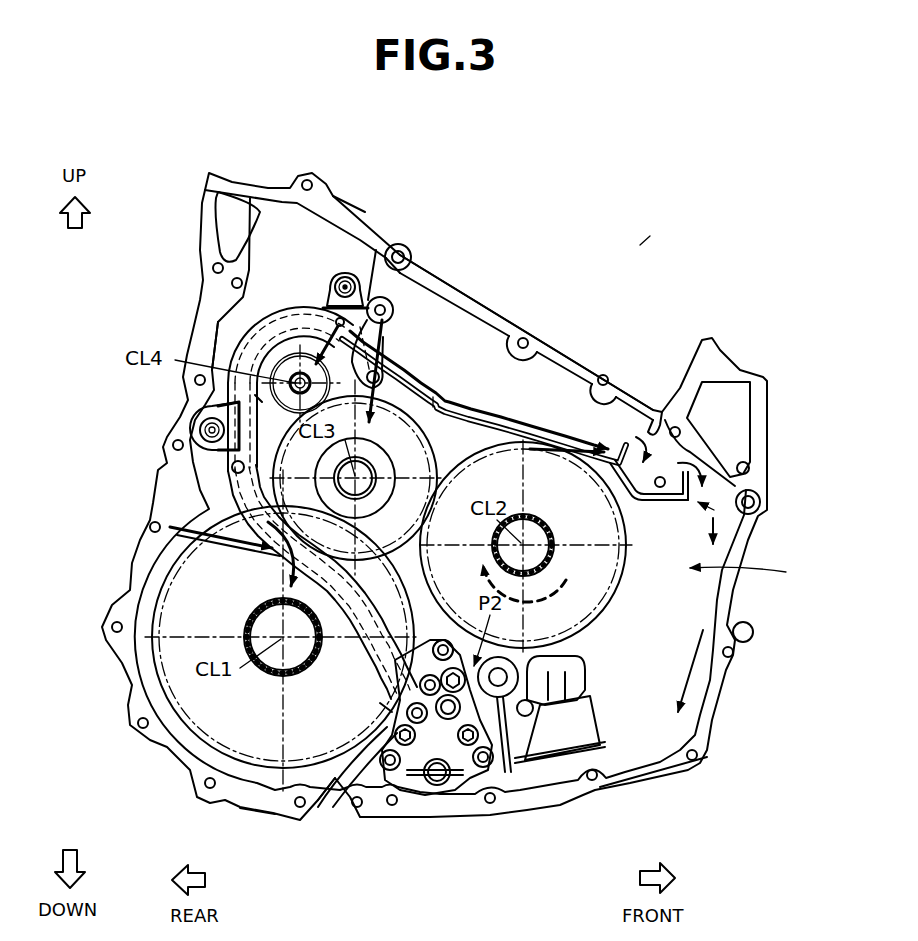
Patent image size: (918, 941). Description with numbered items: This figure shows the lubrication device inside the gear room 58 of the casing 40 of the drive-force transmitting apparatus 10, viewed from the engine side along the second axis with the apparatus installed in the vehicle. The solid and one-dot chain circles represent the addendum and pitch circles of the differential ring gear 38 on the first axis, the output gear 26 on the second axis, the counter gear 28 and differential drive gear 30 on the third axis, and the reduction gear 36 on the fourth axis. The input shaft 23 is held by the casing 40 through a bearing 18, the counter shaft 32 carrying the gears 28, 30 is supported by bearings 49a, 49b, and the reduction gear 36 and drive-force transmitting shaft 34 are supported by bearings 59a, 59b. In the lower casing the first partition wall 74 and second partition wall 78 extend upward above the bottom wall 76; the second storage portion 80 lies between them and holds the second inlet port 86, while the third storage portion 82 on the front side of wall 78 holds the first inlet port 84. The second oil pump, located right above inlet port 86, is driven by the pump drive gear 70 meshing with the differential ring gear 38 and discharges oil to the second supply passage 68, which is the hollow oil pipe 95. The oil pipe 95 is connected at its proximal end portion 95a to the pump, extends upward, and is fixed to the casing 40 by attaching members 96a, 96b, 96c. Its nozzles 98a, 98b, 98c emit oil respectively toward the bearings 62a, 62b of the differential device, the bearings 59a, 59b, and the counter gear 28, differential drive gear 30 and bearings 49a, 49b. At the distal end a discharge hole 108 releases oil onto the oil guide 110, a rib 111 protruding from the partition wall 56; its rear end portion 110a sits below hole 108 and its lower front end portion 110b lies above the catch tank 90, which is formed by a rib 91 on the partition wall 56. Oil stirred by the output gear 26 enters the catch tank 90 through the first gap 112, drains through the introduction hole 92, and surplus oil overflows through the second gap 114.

The drive-force transmitting apparatus 10 is at (650, 236).
The bearing 18 is at (618, 570).
The input shaft 23 is at (542, 537).
The output gear 26 is at (602, 630).
The counter gear 28 is at (417, 422).
The differential drive gear 30 is at (232, 493).
The counter shaft 32 is at (368, 494).
The drive-force transmitting shaft 34 is at (298, 380).
The reduction gear 36 is at (280, 355).
The differential ring gear 38 is at (148, 662).
The casing 40 is at (368, 210).
The bearing 49a is at (484, 276).
The bearing 49b is at (477, 303).
The partition wall 56 is at (700, 597).
The gear room 58 is at (751, 570).
The bearing 59a is at (148, 378).
The bearing 59b is at (262, 400).
The bearing 62a is at (213, 696).
The bearing 62b is at (270, 672).
The second supply passage 68 is at (243, 613).
The pump drive gear 70 is at (386, 714).
The first partition wall 74 is at (330, 784).
The bottom wall 76 is at (257, 782).
The second partition wall 78 is at (504, 776).
The second storage portion 80 is at (380, 786).
The third storage portion 82 is at (628, 759).
The first inlet port 84 is at (544, 782).
The second inlet port 86 is at (440, 790).
The catch tank 90 is at (761, 522).
The rib 91 is at (660, 504).
The introduction hole 92 is at (660, 476).
The oil pipe 95 is at (232, 637).
The proximal end portion 95a is at (385, 708).
The attaching member 96a is at (426, 660).
The attaching member 96b is at (205, 420).
The attaching member 96c is at (343, 278).
The nozzle 98a is at (231, 467).
The nozzle 98b is at (298, 347).
The nozzle 98c is at (418, 398).
The discharge hole 108 is at (369, 300).
The oil guide 110 is at (510, 400).
The rear end portion 110a is at (385, 298).
The front end portion 110b is at (626, 440).
The rib 111 is at (458, 410).
The first gap 112 is at (598, 457).
The second gap 114 is at (692, 450).